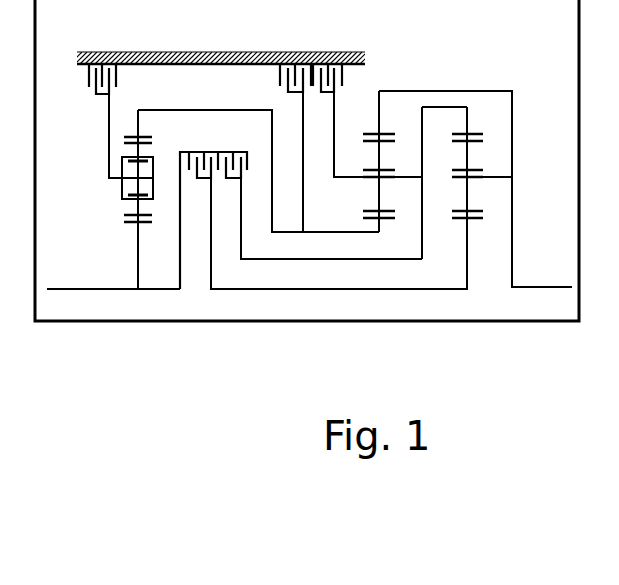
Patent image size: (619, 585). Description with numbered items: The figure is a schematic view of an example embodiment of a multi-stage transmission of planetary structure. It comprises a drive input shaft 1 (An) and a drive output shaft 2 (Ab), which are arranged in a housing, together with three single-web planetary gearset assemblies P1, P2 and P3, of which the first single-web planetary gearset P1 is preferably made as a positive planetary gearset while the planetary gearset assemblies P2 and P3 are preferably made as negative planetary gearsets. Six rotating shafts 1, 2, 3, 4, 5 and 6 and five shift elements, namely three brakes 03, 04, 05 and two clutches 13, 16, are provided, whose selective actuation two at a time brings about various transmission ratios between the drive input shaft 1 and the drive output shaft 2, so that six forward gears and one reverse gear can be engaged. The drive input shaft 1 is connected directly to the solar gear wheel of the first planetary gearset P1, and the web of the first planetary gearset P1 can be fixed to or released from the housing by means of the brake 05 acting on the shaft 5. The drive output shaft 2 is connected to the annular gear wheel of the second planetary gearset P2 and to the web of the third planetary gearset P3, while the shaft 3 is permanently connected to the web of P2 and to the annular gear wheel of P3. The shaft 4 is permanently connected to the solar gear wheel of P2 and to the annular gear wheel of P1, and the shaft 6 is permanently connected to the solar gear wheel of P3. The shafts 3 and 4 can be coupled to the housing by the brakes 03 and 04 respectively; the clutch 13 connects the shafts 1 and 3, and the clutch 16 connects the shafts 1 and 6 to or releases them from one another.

The drive input shaft 1 is at (138, 226).
The shaft 4 is at (259, 131).
The shaft 5 is at (142, 178).
The drive output shaft 2 is at (437, 197).
The shaft 3 is at (423, 148).
The shaft 6 is at (467, 222).
The brake 05 is at (113, 121).
The brake 04 is at (285, 148).
The brake 03 is at (367, 120).
The clutch 16 is at (324, 211).
The clutch 13 is at (322, 196).
The first single-web planetary gearset P1 is at (218, 199).
The second planetary gearset P2 is at (467, 154).
The third planetary gearset P3 is at (489, 163).
The drive input shaft An is at (113, 276).
The drive output shaft Ab is at (540, 274).